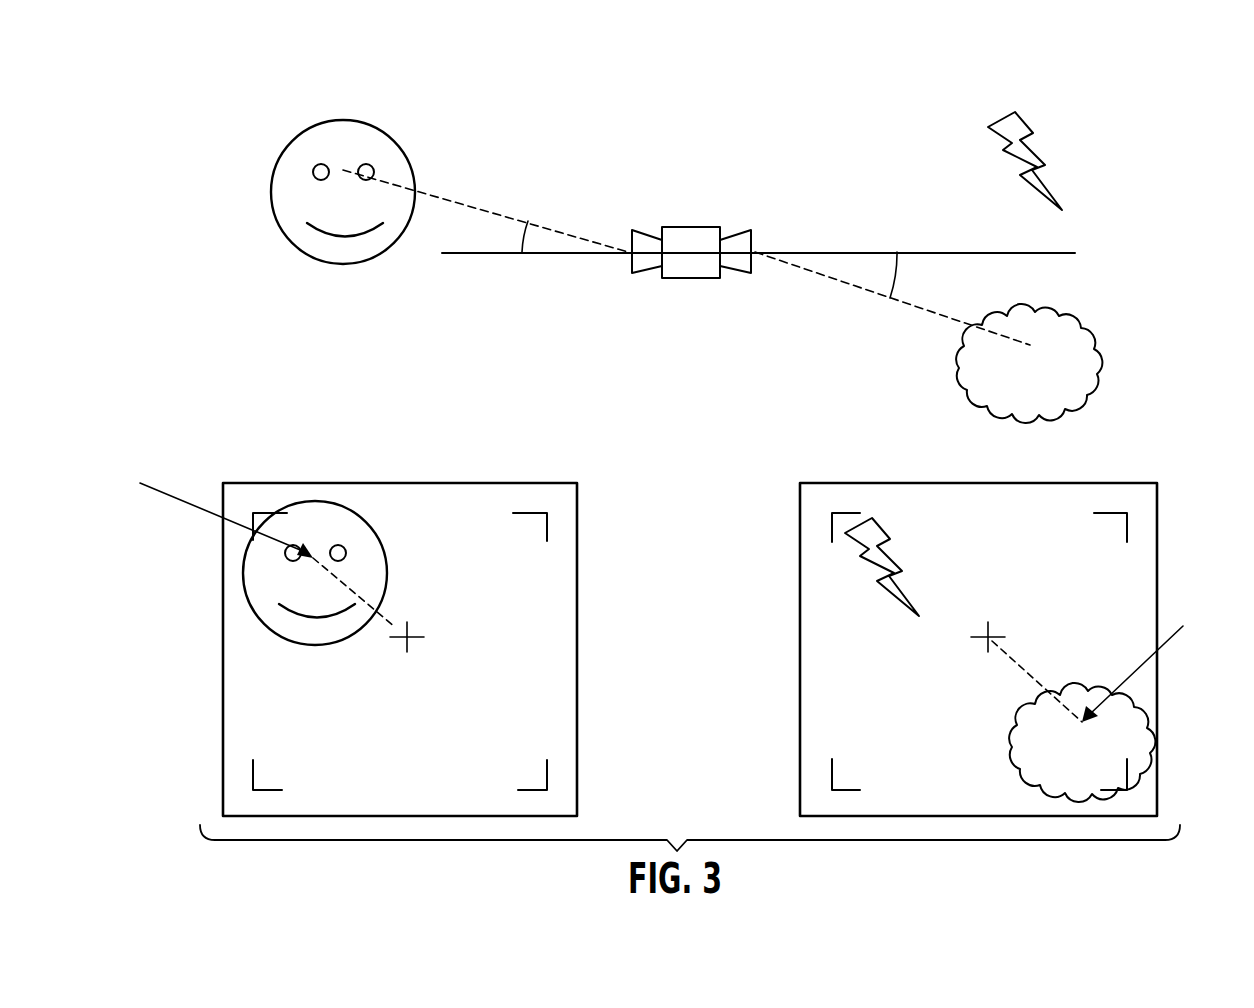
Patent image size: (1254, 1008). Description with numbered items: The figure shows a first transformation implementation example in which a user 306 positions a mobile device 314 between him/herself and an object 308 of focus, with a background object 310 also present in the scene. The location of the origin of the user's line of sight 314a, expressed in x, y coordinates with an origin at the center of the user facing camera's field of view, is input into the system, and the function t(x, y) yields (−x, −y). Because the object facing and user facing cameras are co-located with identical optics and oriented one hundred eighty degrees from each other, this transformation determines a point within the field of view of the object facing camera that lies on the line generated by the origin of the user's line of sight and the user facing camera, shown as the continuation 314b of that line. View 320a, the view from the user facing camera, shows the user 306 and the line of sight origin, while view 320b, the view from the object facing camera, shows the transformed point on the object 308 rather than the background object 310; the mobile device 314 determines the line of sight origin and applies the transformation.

The user 306 is at (282, 193).
The object of focus 308 is at (955, 386).
The background object 310 is at (1030, 148).
The mobile device 314 is at (617, 198).
The line of sight 314a is at (492, 210).
The gaze angle on object-facing camera side 314b is at (858, 288).
The view from user facing camera 320a is at (223, 657).
The view from object facing camera 320b is at (802, 658).